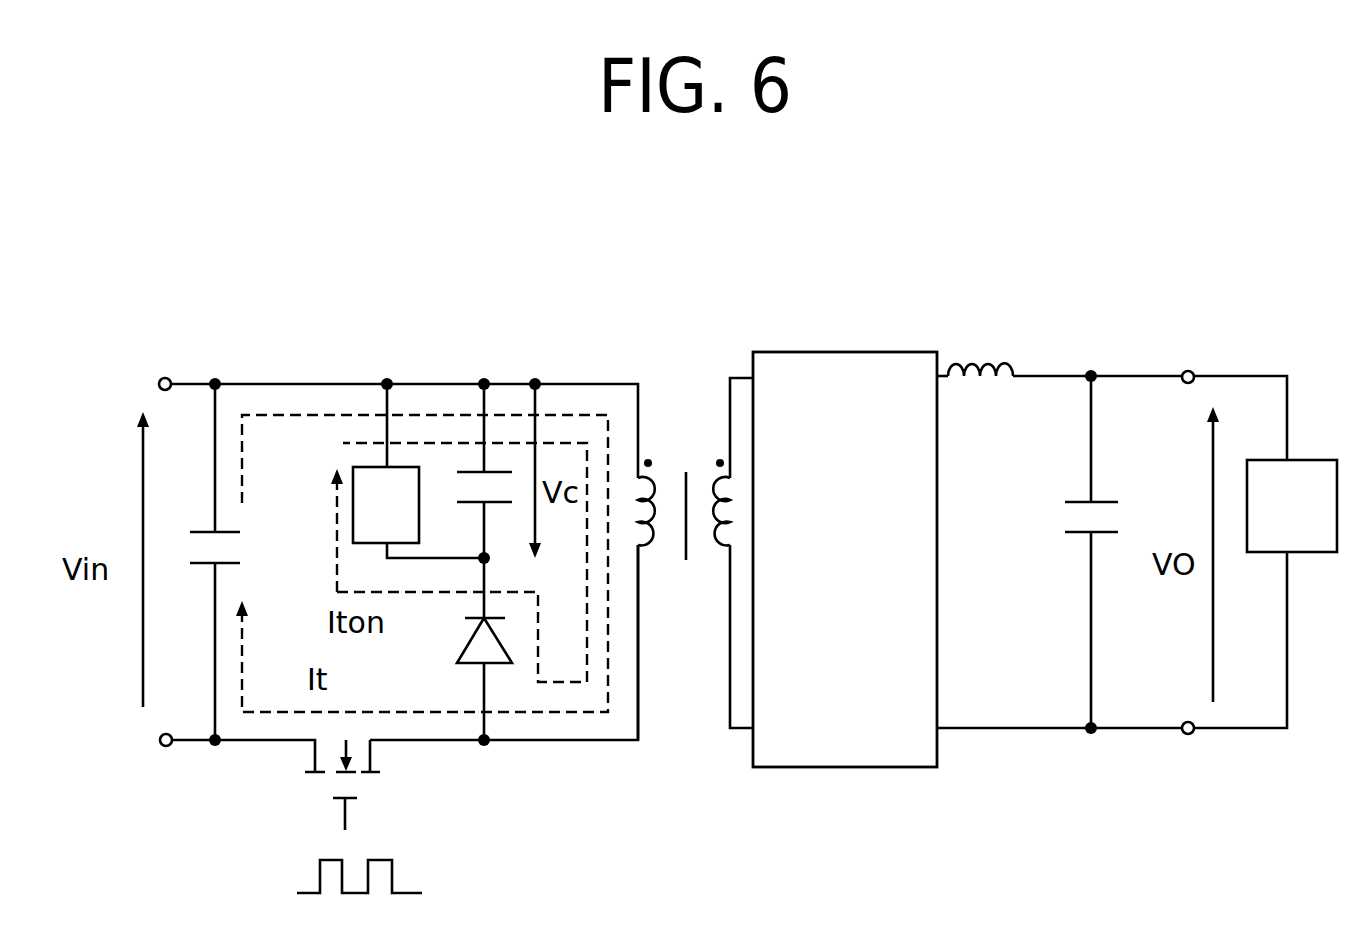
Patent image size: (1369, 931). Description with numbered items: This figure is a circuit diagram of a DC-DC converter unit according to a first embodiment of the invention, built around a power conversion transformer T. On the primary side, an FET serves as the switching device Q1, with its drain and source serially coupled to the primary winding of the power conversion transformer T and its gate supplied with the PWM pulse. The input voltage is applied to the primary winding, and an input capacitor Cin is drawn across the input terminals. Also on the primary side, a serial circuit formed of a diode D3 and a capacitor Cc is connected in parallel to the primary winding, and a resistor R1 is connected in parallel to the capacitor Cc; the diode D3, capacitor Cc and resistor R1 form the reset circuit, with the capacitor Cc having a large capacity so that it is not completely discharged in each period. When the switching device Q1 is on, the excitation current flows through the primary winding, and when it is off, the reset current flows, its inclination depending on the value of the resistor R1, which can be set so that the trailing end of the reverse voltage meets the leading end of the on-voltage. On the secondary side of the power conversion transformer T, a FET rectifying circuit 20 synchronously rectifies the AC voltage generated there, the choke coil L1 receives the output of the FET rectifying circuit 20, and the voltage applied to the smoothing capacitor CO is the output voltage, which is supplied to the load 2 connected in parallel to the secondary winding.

The FET rectifying circuit 20 is at (838, 352).
The load 2 is at (1312, 460).
The switching device Q1 is at (311, 816).
The resistor R1 is at (418, 471).
The capacitor Cc is at (492, 471).
The diode D3 is at (462, 649).
The input capacitor Cin is at (234, 562).
The power conversion transformer T is at (695, 533).
The choke coil L1 is at (980, 395).
The smoothing capacitor CO is at (1076, 552).